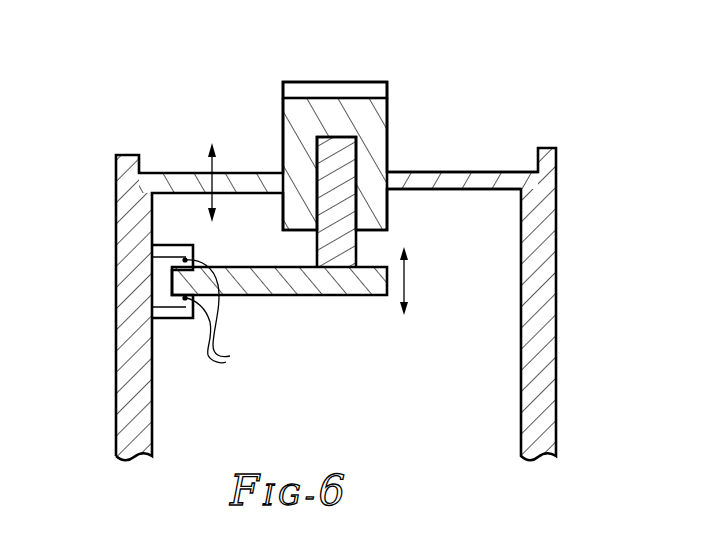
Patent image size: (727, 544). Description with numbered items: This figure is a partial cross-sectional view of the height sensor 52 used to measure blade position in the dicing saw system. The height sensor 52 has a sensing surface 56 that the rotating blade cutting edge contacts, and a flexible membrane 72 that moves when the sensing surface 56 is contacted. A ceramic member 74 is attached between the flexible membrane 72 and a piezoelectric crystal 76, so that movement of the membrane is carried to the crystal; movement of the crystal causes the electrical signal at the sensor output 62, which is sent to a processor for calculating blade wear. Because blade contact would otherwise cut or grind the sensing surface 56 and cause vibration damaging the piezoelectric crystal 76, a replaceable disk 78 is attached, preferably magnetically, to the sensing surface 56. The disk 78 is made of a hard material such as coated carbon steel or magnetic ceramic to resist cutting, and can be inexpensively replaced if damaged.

The height sensor 52 is at (336, 250).
The sensing surface 56 is at (305, 96).
The sensor output 62 is at (223, 346).
The flexible membrane 72 is at (497, 171).
The ceramic member 74 is at (345, 152).
The piezoelectric crystal 76 is at (333, 285).
The disk 78 is at (357, 86).